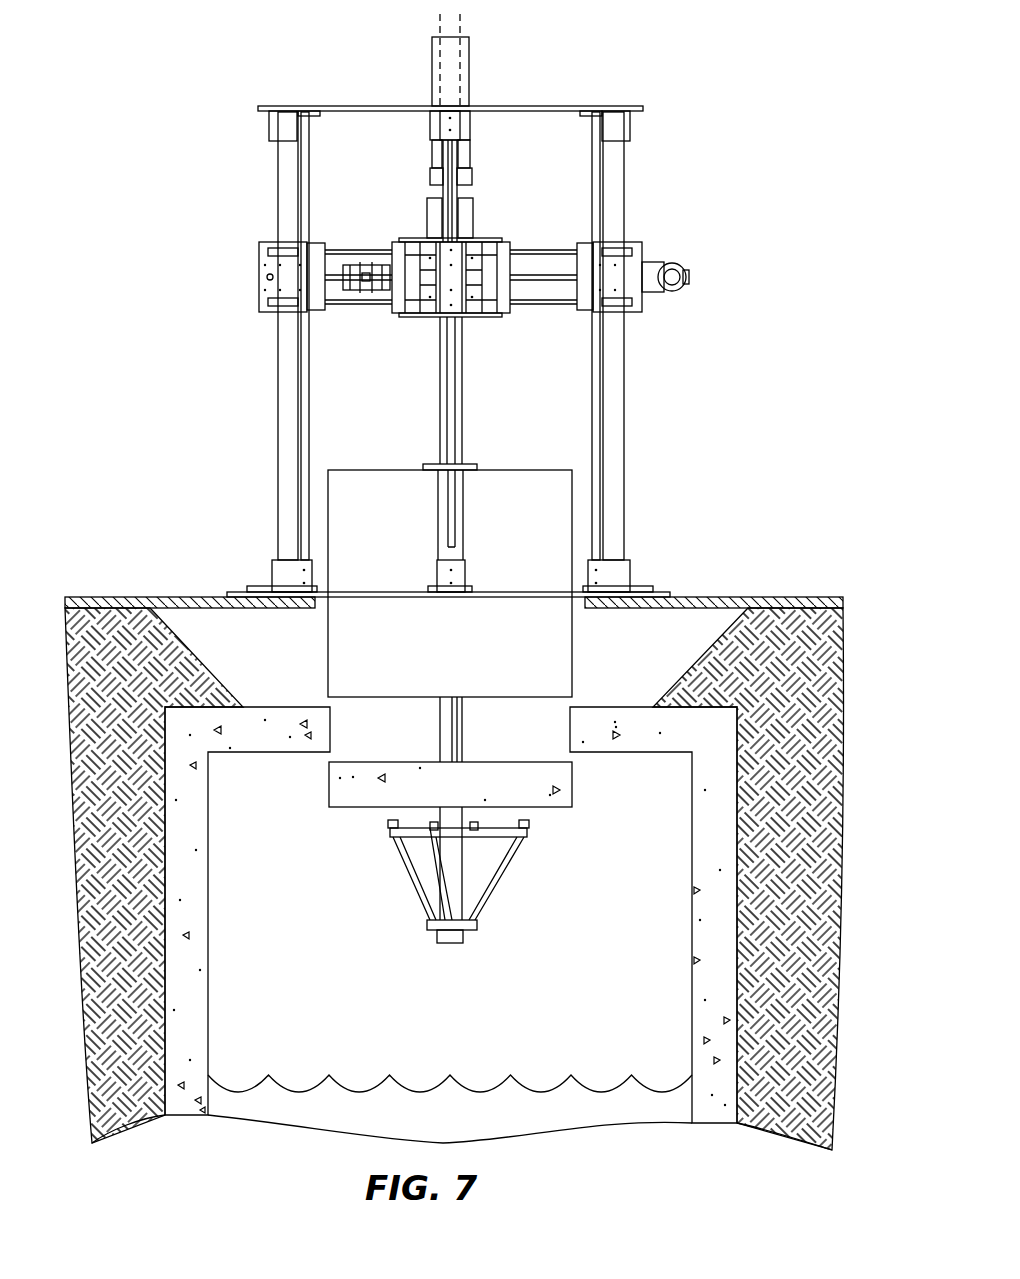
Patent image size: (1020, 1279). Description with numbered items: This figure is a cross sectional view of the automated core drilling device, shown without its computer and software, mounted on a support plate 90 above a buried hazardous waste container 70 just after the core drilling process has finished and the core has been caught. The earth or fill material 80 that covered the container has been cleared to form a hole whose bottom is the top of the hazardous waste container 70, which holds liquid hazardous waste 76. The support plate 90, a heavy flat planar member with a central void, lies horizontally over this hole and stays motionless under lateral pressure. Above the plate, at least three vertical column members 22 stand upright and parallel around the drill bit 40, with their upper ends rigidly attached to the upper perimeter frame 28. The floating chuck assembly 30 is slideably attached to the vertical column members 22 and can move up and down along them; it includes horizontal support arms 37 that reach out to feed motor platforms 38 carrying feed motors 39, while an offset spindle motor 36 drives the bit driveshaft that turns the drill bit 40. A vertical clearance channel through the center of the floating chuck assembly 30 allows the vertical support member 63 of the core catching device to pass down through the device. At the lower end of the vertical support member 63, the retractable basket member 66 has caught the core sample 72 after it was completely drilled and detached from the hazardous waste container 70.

The vertical column member 22 is at (278, 435).
The upper perimeter frame 28 is at (563, 106).
The floating chuck assembly 30 is at (502, 238).
The offset spindle motor 36 is at (470, 67).
The horizontal support arm 37 is at (541, 290).
The feed motor platform 38 is at (258, 272).
The feed motor 39 is at (683, 272).
The drill bit 40 is at (555, 648).
The vertical support member 63 is at (462, 18).
The retractable basket member 66 is at (505, 880).
The hazardous waste container 70 is at (195, 888).
The core sample 72 is at (335, 792).
The liquid hazardous waste 76 is at (550, 1112).
The earth or fill material 80 is at (843, 690).
The support plate 90 is at (757, 598).